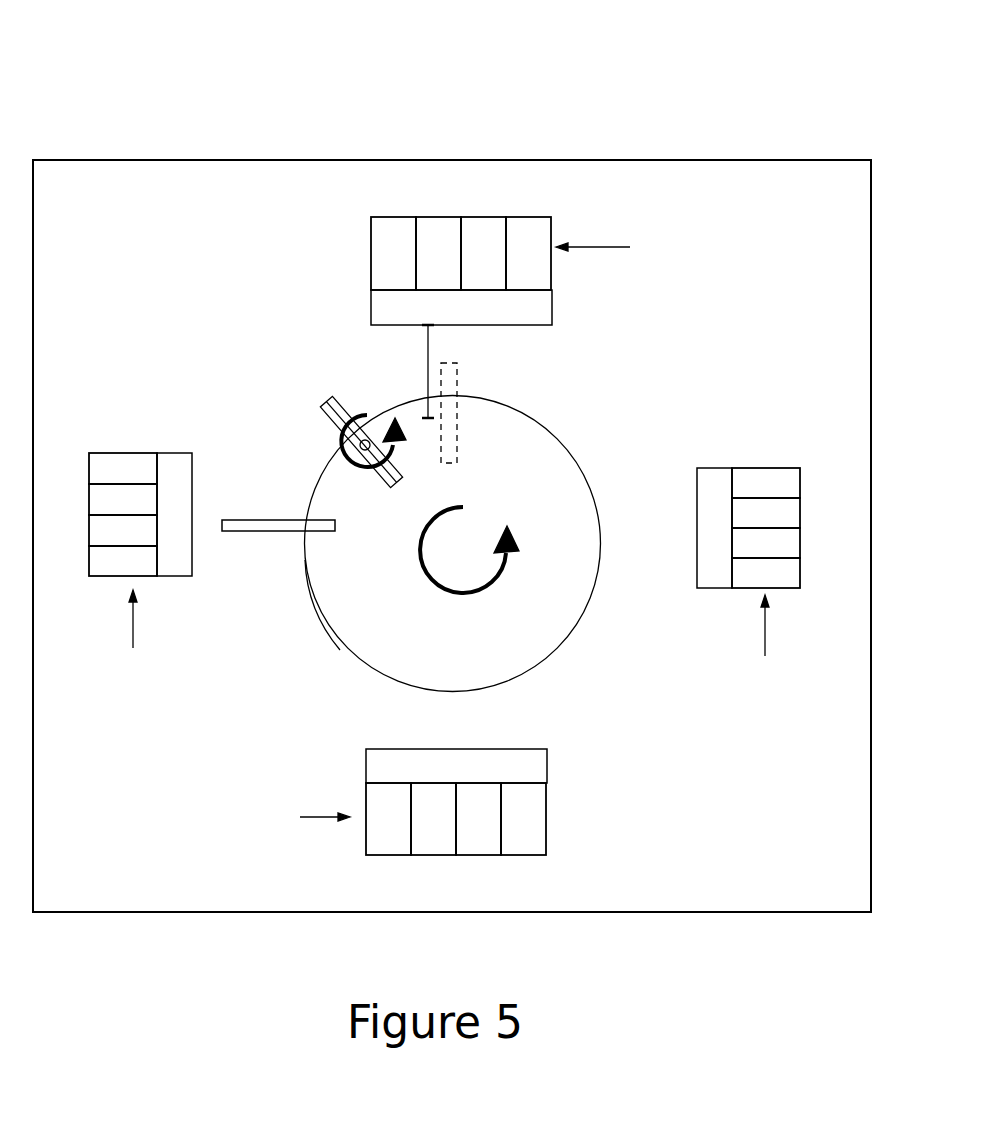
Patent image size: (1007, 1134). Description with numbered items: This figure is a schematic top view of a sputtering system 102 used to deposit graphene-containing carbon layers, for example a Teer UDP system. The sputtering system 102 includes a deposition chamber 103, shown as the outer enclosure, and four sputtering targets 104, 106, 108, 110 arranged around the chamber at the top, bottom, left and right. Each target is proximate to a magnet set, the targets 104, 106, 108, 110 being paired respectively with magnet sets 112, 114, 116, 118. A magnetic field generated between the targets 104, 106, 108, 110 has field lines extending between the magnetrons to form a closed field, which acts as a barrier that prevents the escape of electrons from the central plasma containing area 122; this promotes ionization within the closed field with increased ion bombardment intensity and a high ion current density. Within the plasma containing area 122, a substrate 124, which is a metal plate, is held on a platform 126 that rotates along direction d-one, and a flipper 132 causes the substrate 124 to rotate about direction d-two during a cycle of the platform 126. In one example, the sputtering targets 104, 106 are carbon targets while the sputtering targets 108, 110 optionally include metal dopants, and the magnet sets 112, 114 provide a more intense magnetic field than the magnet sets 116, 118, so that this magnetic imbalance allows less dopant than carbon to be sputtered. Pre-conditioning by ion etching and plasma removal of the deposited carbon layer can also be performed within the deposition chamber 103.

The sputtering system 102 is at (612, 88).
The deposition chamber 103 is at (222, 158).
The sputtering target 104 is at (372, 300).
The sputtering target 106 is at (547, 762).
The sputtering target 108 is at (178, 460).
The sputtering target 110 is at (723, 467).
The magnet set 112 is at (612, 247).
The magnet set 114 is at (305, 818).
The magnet set 116 is at (133, 633).
The magnet set 118 is at (765, 640).
The plasma containing area 122 is at (590, 427).
The substrate 124 is at (332, 397).
The platform 126 is at (333, 633).
The flipper 132 is at (275, 520).